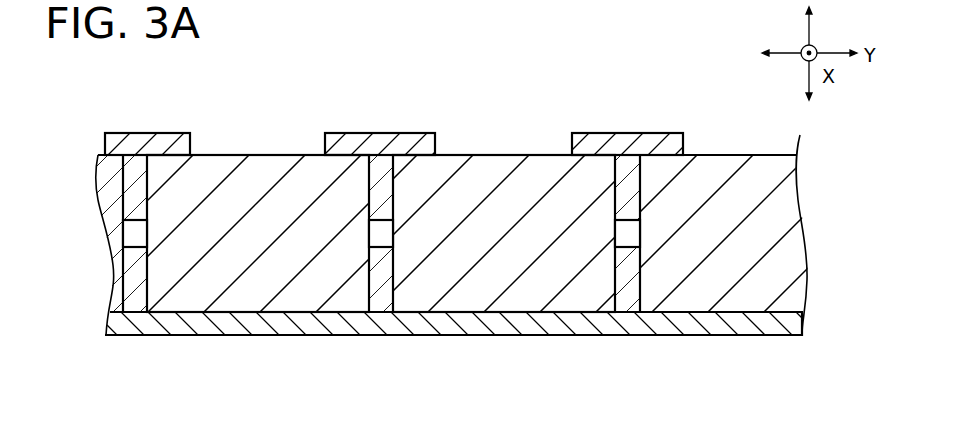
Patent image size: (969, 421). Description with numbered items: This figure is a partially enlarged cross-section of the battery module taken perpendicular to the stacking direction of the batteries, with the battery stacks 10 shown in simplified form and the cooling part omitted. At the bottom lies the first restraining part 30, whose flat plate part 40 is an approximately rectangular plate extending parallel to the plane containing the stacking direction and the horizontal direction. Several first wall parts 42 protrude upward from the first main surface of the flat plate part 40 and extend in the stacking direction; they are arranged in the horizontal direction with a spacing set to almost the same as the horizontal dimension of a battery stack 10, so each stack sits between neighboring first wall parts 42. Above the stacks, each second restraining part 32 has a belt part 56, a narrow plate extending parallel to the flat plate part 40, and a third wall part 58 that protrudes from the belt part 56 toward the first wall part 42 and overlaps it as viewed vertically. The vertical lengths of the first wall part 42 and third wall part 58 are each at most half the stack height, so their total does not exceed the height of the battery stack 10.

The battery stack 10 is at (500, 155).
The first restraining part 30 is at (806, 323).
The second restraining part 32 is at (681, 128).
The flat plate part 40 is at (714, 335).
The first wall part 42 is at (614, 290).
The belt part 56 is at (578, 133).
The third wall part 58 is at (640, 186).